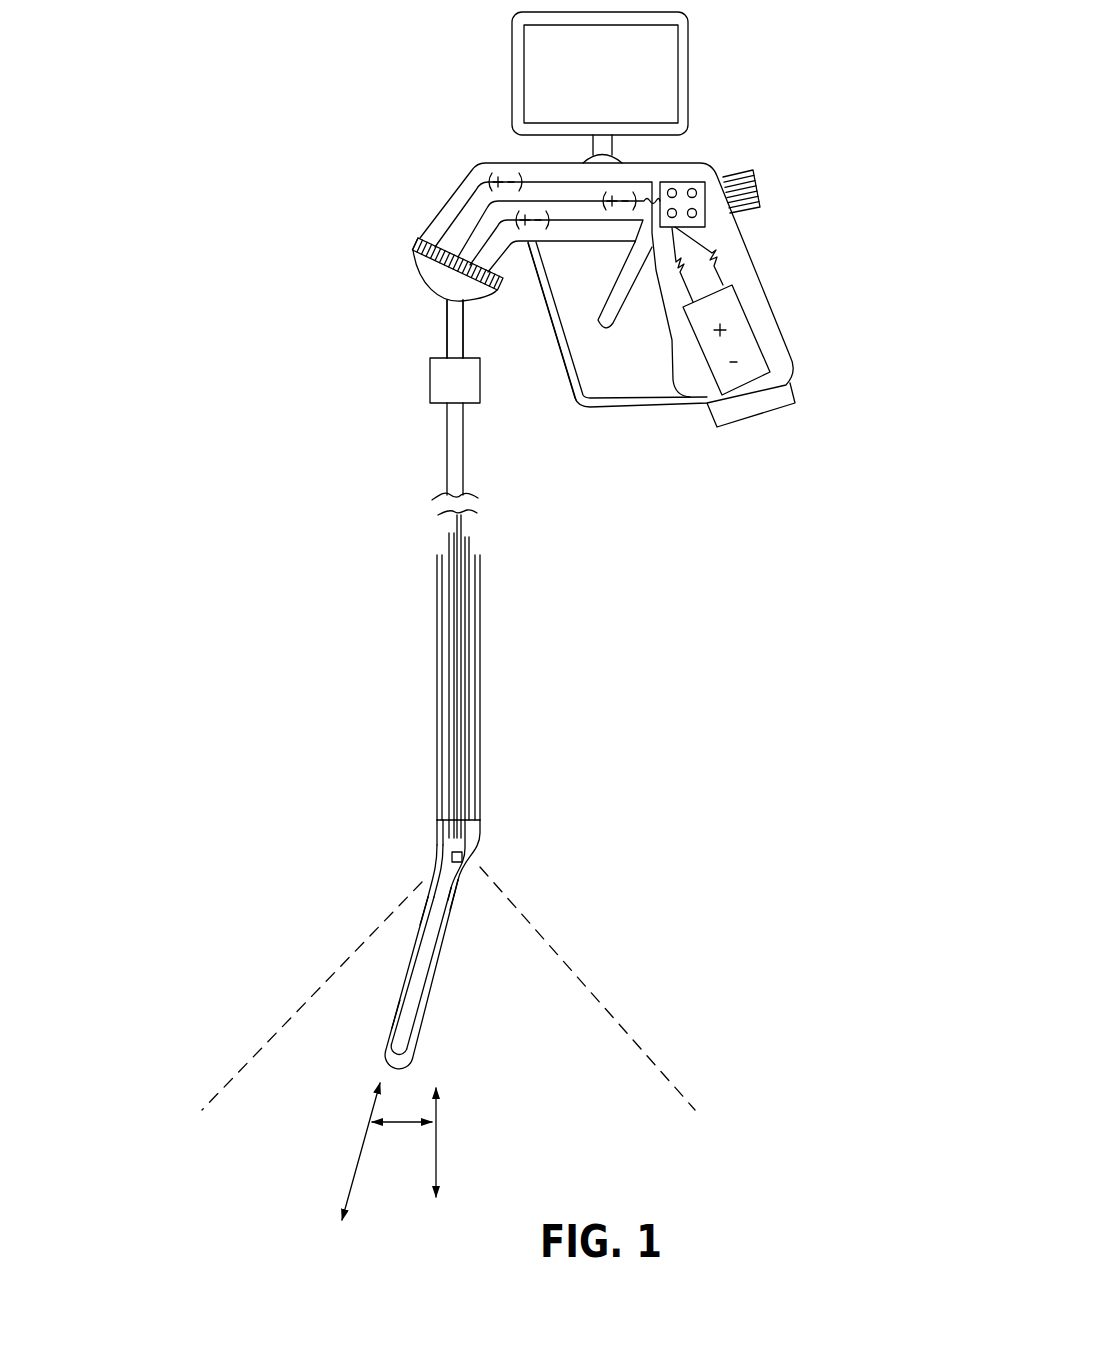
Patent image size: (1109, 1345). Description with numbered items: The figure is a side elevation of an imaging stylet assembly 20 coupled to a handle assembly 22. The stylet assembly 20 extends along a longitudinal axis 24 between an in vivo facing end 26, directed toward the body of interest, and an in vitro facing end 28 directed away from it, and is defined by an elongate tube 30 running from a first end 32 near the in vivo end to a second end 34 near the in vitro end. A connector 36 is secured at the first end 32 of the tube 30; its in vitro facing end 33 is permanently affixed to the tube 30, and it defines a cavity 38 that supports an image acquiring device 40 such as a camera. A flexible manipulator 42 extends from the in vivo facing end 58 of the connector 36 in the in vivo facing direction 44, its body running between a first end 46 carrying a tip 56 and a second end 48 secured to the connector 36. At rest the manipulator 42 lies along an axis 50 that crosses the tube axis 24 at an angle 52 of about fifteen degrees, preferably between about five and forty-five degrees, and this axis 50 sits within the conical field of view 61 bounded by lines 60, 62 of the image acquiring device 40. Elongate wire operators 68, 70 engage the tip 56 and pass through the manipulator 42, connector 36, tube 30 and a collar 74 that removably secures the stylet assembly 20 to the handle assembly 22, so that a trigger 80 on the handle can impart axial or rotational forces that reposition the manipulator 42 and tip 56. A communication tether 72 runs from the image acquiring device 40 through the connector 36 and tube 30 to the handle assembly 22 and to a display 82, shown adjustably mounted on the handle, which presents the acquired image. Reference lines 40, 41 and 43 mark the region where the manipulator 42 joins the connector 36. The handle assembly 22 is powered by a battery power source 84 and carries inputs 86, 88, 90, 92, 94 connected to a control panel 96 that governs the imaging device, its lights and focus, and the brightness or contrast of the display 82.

The stylet assembly 20 is at (786, 697).
The handle assembly 22 is at (830, 168).
The longitudinal axis 24 is at (437, 1126).
The in vivo facing end 26 is at (318, 1088).
The in vitro facing end 28 is at (275, 370).
The tube 30 is at (483, 682).
The first end of tube 32 is at (507, 812).
The in vitro facing end of connector 33 is at (411, 805).
The second end of tube 34 is at (420, 314).
The connector 36 is at (476, 832).
The cavity 38 is at (452, 856).
The image acquiring device 40 is at (470, 862).
The articulation wire 41 is at (468, 868).
The manipulator 42 is at (407, 980).
The articulation wire 43 is at (468, 865).
The in vivo facing direction 44 is at (97, 927).
The first end of manipulator 46 is at (382, 1040).
The second end of manipulator 48 is at (464, 893).
The manipulator axis 50 is at (358, 1156).
The angle 52 is at (407, 1124).
The tip 56 is at (412, 1058).
The in vivo facing end of connector 58 is at (417, 882).
The field of view line 60 is at (237, 1079).
The field of view 61 is at (466, 1029).
The field of view line 62 is at (647, 1058).
The elongate operator 68 is at (470, 538).
The elongate operator 70 is at (445, 548).
The communication tether 72 is at (463, 527).
The collar 74 is at (422, 268).
The trigger 80 is at (632, 300).
The display 82 is at (678, 40).
The power source 84 is at (750, 317).
The input 86 is at (677, 188).
The input 88 is at (750, 172).
The input 90 is at (697, 213).
The input 92 is at (676, 219).
The input 94 is at (754, 190).
The control panel 96 is at (694, 189).